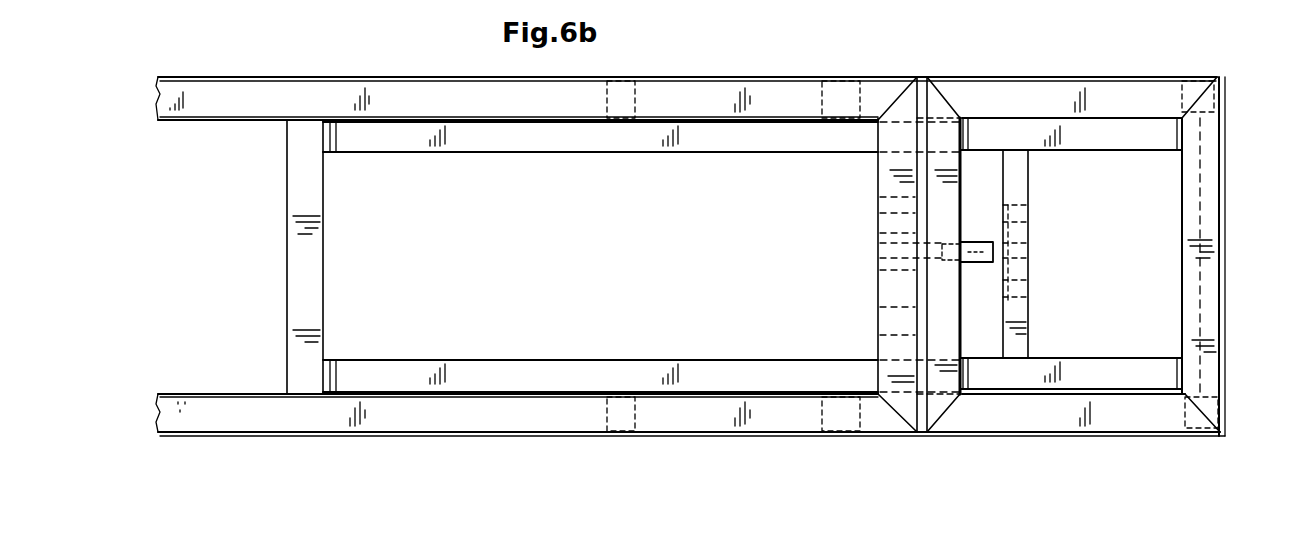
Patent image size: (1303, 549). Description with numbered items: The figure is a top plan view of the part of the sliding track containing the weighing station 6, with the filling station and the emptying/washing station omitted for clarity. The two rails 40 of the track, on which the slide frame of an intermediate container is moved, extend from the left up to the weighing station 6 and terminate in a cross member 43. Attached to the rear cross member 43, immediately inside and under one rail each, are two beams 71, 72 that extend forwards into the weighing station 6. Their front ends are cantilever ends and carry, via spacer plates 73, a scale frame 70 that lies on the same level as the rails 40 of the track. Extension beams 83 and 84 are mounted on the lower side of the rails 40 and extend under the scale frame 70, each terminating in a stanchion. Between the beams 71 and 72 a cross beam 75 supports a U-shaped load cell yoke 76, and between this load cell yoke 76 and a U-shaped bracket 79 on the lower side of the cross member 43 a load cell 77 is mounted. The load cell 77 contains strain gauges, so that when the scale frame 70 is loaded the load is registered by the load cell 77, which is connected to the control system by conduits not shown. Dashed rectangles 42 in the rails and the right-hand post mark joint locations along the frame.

The weighing station 6 is at (1148, 205).
The rails 40 is at (224, 106).
The fastener location / post 42 is at (770, 77).
The cross member 43 is at (322, 247).
The scale frame 70 is at (1205, 240).
The beam 71 is at (557, 140).
The beam 72 is at (604, 378).
The spacer plates 73 is at (981, 118).
The cross beam 75 is at (1029, 178).
The load cell yoke 76 is at (1030, 292).
The load cell 77 is at (978, 242).
The bracket 79 is at (893, 214).
The extension beam 83 is at (921, 77).
The extension beam 84 is at (921, 436).